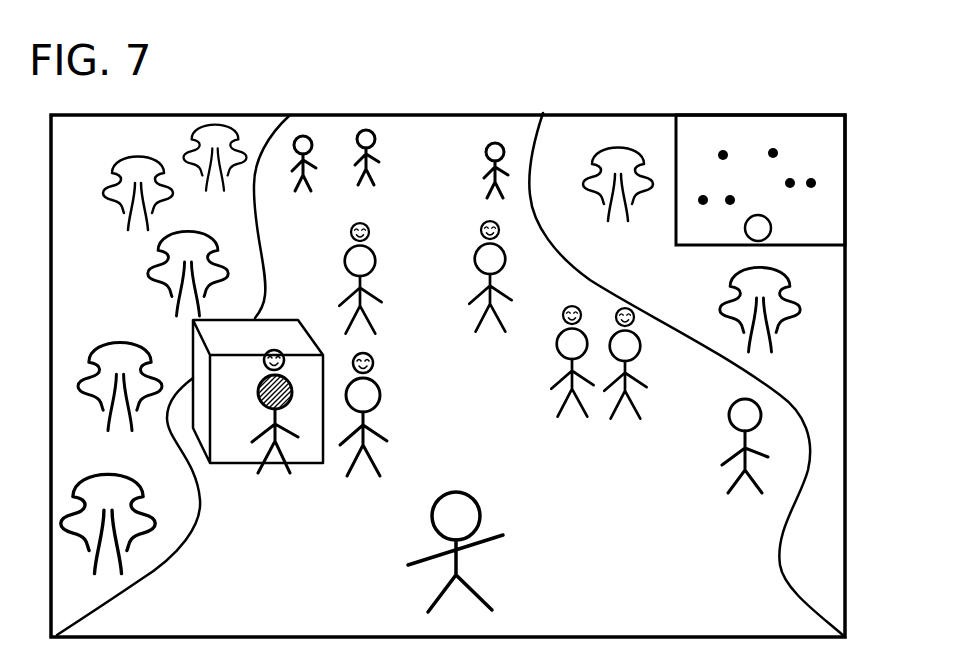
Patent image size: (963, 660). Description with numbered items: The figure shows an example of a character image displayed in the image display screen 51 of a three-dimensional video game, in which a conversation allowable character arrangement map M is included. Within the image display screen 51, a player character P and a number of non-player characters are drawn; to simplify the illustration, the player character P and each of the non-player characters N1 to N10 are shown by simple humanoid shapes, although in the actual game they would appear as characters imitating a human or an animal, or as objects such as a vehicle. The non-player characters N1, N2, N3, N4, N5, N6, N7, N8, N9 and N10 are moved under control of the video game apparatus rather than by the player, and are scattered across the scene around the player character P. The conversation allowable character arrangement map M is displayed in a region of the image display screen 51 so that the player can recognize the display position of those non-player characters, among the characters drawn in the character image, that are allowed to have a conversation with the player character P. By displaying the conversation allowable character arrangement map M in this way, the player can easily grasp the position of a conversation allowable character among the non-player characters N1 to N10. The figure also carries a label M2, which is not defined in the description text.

The non-player character N1 is at (730, 442).
The non-player character N2 is at (283, 472).
The non-player character N3 is at (378, 426).
The non-player character N4 is at (557, 370).
The non-player character N5 is at (645, 392).
The non-player character N6 is at (372, 283).
The non-player character N7 is at (505, 296).
The non-player character N8 is at (303, 185).
The non-player character N9 is at (378, 155).
The non-player character N10 is at (484, 188).
The conversation allowable character arrangement map M is at (788, 138).
The landmark object M2 is at (618, 202).
The image display screen 51 is at (848, 217).
The player character P is at (488, 565).